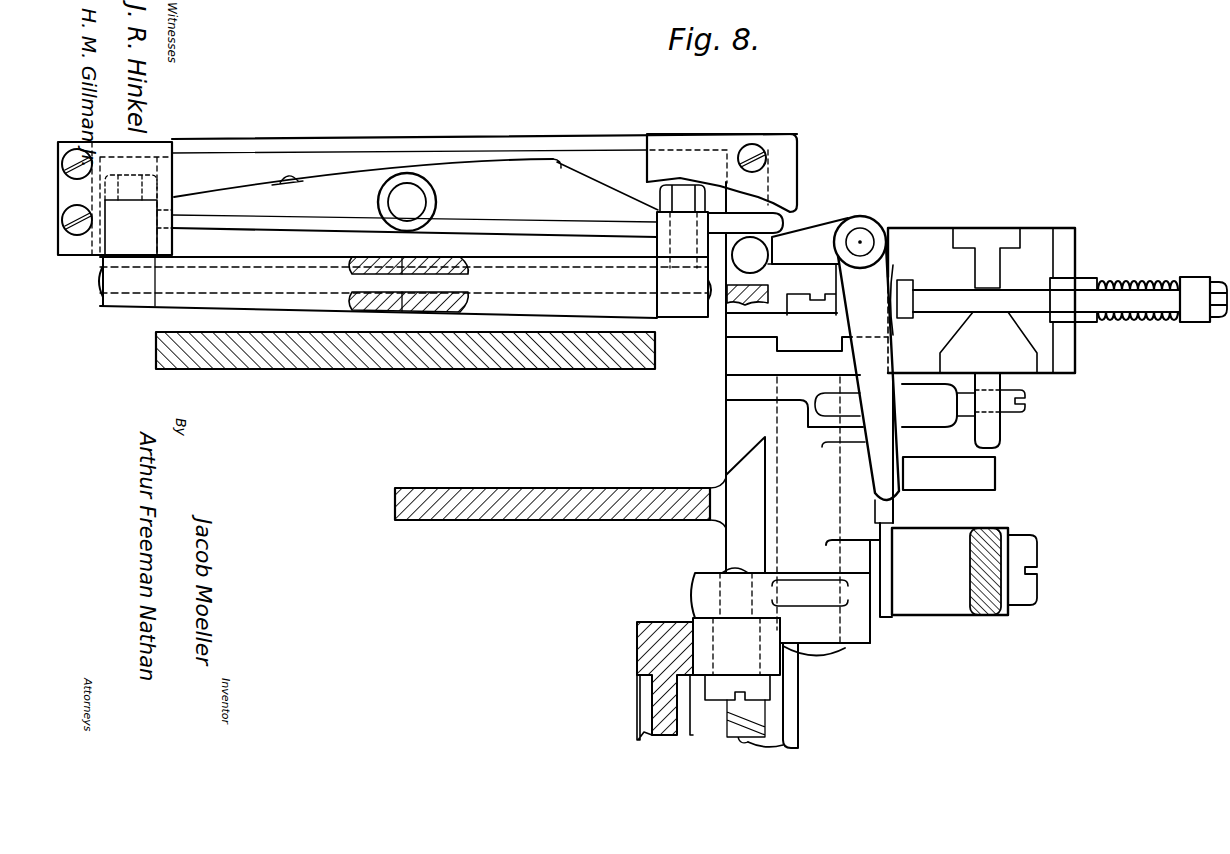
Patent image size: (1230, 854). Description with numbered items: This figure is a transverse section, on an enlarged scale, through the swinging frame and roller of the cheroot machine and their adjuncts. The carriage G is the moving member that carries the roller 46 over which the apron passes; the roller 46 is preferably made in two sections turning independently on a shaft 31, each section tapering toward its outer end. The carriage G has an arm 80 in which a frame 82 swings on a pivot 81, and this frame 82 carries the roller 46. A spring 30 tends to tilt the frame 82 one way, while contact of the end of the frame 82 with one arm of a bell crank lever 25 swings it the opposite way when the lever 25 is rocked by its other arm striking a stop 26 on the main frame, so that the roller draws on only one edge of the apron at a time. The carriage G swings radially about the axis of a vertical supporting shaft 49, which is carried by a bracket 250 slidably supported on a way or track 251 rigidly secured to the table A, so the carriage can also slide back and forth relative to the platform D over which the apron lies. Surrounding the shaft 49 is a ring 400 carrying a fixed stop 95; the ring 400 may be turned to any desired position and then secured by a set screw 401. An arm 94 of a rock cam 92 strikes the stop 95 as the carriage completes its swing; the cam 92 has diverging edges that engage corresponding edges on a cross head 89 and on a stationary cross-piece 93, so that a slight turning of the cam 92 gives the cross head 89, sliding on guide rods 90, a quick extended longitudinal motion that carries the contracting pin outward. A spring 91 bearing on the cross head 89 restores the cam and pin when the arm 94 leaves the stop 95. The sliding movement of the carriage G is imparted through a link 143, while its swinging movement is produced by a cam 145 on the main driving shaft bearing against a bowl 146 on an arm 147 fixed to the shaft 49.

The arm 80 is at (460, 139).
The carriage G is at (830, 175).
The frame 82 is at (363, 185).
The spring 30 is at (560, 165).
The pivot 81 is at (420, 202).
The bell crank lever 25 is at (880, 463).
The roller 46 is at (405, 287).
The shaft 31 is at (408, 284).
The platform D is at (158, 350).
The table A is at (560, 495).
The ring 400 is at (725, 375).
The set screw 401 is at (822, 412).
The bracket 250 is at (750, 432).
The way or track 251 is at (745, 538).
The stationary cross-piece 93 is at (981, 300).
The cross head 89 is at (1031, 300).
The guide rods 90 is at (1036, 300).
The rock cam 92 is at (988, 342).
The spring 91 is at (1124, 282).
The arm 94 is at (1002, 436).
The stop 95 is at (1027, 397).
The stop 26 is at (949, 473).
The arm 147 is at (780, 605).
The bowl 146 is at (736, 680).
The cam 145 is at (640, 656).
The vertical supporting shaft 49 is at (846, 645).
The link 143 is at (985, 607).